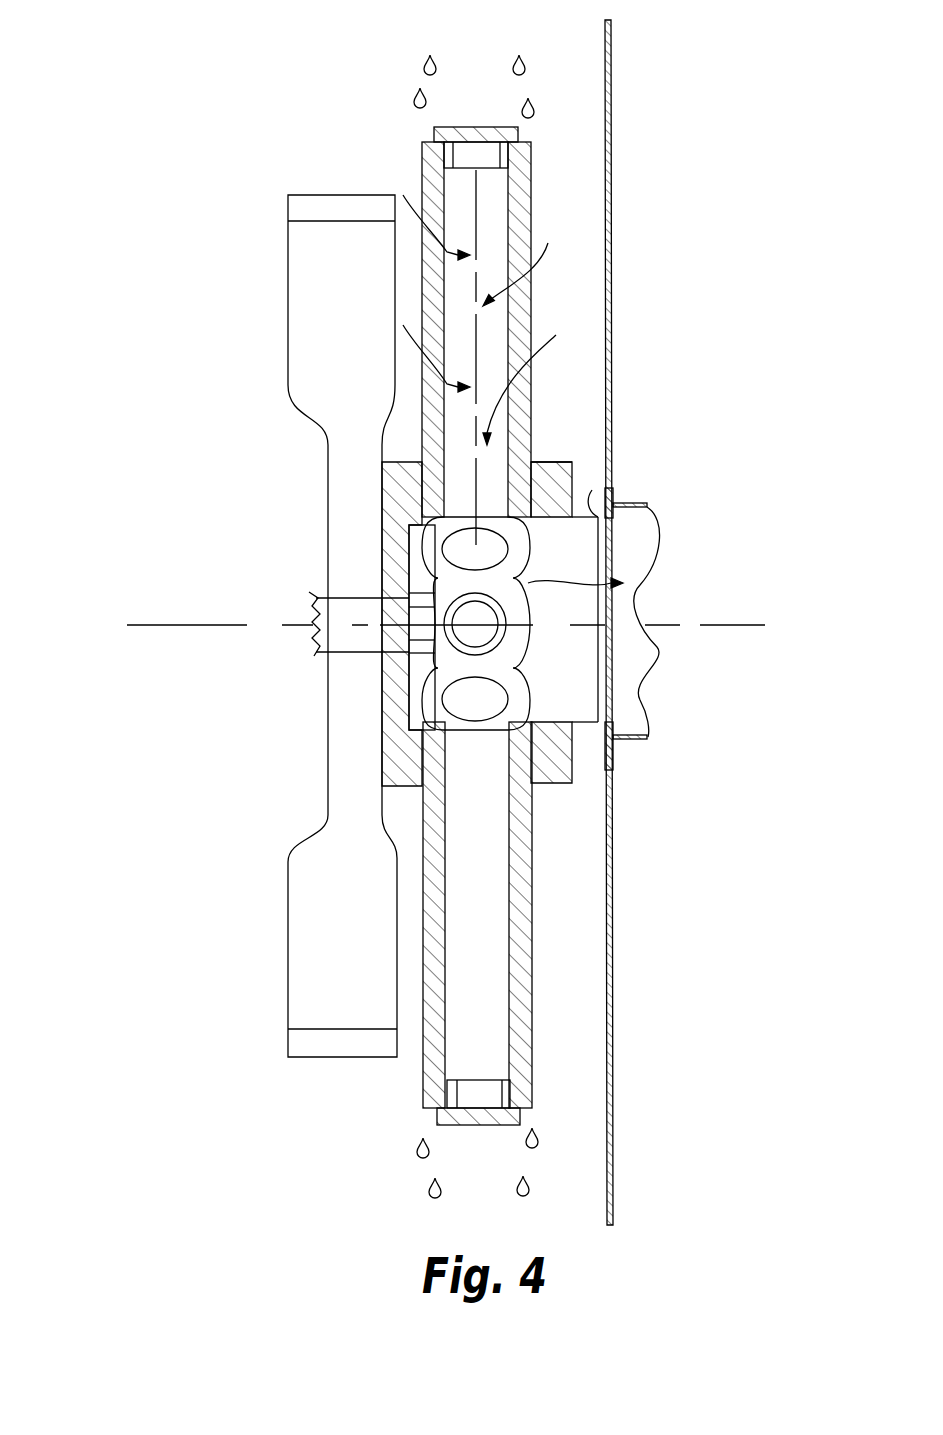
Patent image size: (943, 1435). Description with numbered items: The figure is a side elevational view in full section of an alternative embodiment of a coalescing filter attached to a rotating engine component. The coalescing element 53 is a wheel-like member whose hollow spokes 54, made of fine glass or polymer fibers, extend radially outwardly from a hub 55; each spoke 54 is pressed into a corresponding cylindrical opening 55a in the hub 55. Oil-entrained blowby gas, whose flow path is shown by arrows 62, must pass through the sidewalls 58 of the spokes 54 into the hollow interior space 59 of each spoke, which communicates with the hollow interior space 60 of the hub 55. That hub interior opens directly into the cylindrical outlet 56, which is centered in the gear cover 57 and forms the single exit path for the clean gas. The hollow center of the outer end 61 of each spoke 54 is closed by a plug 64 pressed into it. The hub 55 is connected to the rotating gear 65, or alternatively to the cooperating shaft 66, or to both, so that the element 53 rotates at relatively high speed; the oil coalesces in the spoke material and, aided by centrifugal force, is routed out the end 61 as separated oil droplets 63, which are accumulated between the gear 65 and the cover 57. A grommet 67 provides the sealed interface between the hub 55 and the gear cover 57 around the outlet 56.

The coalescing element 53 is at (545, 420).
The hollow spoke 54 is at (532, 185).
The hub 55 is at (578, 470).
The cylindrical opening 55a is at (575, 463).
The cylindrical outlet 56 is at (625, 560).
The gear cover 57 is at (610, 236).
The sidewalls 58 is at (522, 236).
The hollow interior space 59 is at (468, 220).
The hollow interior space 60 is at (568, 658).
The outer end 61 is at (528, 140).
The arrows 62 is at (420, 222).
The droplets 63 is at (416, 90).
The plug 64 is at (462, 127).
The rotating gear 65 is at (325, 350).
The cooperating shaft 66 is at (347, 608).
The grommet 67 is at (606, 487).